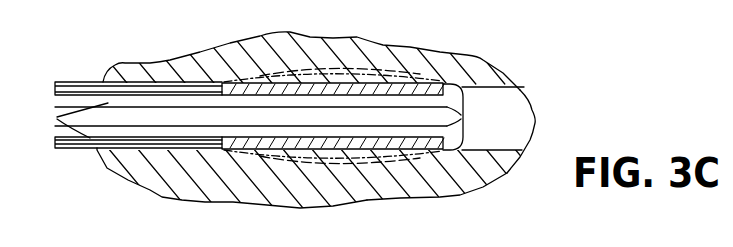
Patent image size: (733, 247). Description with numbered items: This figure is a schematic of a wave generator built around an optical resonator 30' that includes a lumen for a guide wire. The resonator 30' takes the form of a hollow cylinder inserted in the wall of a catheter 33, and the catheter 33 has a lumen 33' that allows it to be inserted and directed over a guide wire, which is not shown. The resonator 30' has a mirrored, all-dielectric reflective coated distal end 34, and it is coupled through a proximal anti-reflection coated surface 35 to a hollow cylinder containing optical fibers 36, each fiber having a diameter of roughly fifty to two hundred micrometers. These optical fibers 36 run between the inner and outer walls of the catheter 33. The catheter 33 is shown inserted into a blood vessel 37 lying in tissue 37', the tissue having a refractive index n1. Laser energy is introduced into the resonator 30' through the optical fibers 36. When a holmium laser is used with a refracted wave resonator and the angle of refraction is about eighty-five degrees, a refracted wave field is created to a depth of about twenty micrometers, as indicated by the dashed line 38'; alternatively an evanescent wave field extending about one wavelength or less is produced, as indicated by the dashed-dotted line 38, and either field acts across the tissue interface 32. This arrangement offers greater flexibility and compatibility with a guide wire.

The resonator 30' is at (311, 55).
The tissue interface 32 is at (311, 155).
The catheter 33 is at (244, 139).
The lumen 33' is at (488, 118).
The distal end 34 is at (511, 154).
The proximal anti-reflection coated surface 35 is at (221, 150).
The optical fibers 36 is at (63, 117).
The blood vessel 37 is at (538, 131).
The tissue 37' is at (333, 195).
The dashed-dotted line 38 is at (290, 43).
The dashed line 38' is at (333, 44).
The refractive index n1 is at (438, 149).